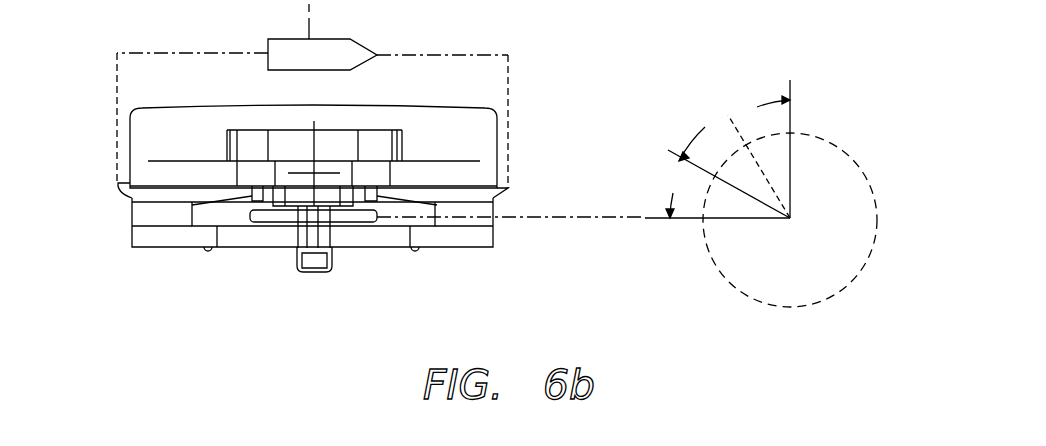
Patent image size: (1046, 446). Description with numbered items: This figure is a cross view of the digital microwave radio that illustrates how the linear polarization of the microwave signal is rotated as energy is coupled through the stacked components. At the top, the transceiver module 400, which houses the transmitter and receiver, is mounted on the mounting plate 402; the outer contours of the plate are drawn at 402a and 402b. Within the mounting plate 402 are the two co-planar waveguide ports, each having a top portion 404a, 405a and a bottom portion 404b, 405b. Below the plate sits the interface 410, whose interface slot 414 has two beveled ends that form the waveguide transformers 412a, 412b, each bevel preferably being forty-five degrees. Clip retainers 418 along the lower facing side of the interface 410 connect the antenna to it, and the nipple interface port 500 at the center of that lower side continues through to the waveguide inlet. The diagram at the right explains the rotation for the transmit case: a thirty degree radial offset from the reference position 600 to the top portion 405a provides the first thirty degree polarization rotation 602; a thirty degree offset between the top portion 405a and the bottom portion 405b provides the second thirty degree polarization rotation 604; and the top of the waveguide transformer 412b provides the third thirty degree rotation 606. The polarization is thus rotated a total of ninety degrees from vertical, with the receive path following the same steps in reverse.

The transceiver module 400 is at (483, 170).
The mounting plate 402 is at (510, 201).
The base lip 402a is at (118, 190).
The base body 402b is at (127, 199).
The top portion of waveguide port 404a is at (250, 190).
The bottom portion of waveguide port 404b is at (252, 196).
The top portion of waveguide port 405a is at (380, 190).
The bottom portion of waveguide port 405b is at (440, 207).
The interface 410 is at (192, 224).
The waveguide transformer 412a is at (245, 210).
The waveguide transformer 412b is at (437, 207).
The interface slot 414 is at (345, 215).
The clip retainers 418 is at (208, 250).
The nipple interface port 500 is at (318, 272).
The reference position 600 is at (792, 127).
The first 30° polarization rotation 602 is at (763, 92).
The second thirty degree polarization rotation 604 is at (703, 127).
The third thirty degree rotation 606 is at (675, 203).